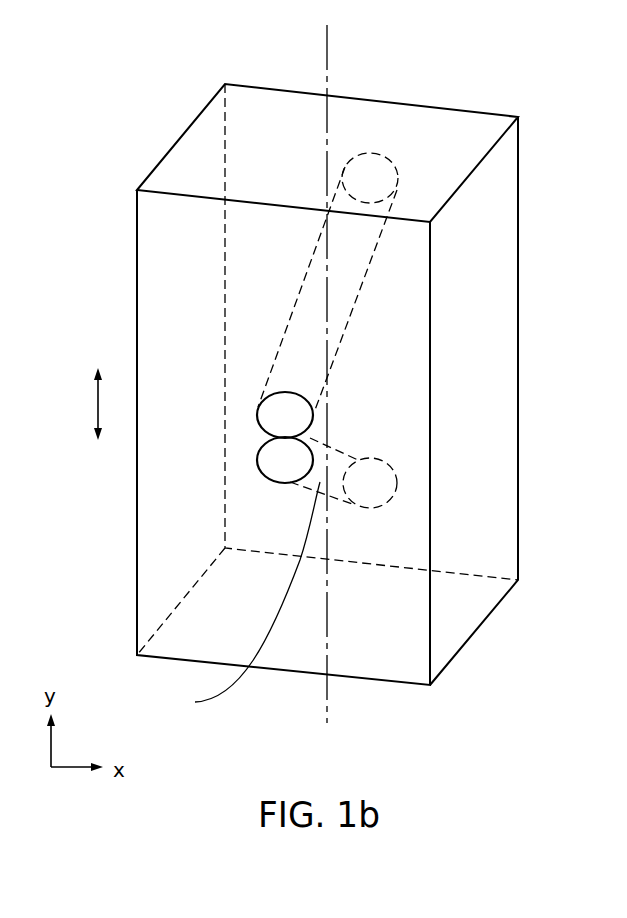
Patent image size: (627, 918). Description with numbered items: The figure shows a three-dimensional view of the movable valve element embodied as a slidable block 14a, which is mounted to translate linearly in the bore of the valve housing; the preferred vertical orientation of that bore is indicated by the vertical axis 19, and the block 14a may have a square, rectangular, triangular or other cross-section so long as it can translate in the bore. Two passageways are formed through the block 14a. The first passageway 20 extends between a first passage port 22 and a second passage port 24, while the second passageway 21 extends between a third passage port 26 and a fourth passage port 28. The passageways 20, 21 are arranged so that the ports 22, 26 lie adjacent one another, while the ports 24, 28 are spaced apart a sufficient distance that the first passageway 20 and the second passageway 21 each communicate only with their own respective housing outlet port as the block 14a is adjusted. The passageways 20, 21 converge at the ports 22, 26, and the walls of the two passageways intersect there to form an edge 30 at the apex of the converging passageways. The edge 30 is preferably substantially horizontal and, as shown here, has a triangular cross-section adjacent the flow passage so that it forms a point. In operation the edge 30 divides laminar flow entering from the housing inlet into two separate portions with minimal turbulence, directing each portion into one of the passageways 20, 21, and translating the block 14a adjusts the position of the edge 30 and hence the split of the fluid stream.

The slidable block 14a is at (466, 76).
The vertical axis 19 is at (327, 72).
The first passageway 20 is at (308, 315).
The second passageway 21 is at (243, 601).
The first passage port 22 is at (271, 403).
The second passage port 24 is at (380, 184).
The third passage port 26 is at (270, 462).
The fourth passage port 28 is at (394, 482).
The edge 30 is at (300, 430).